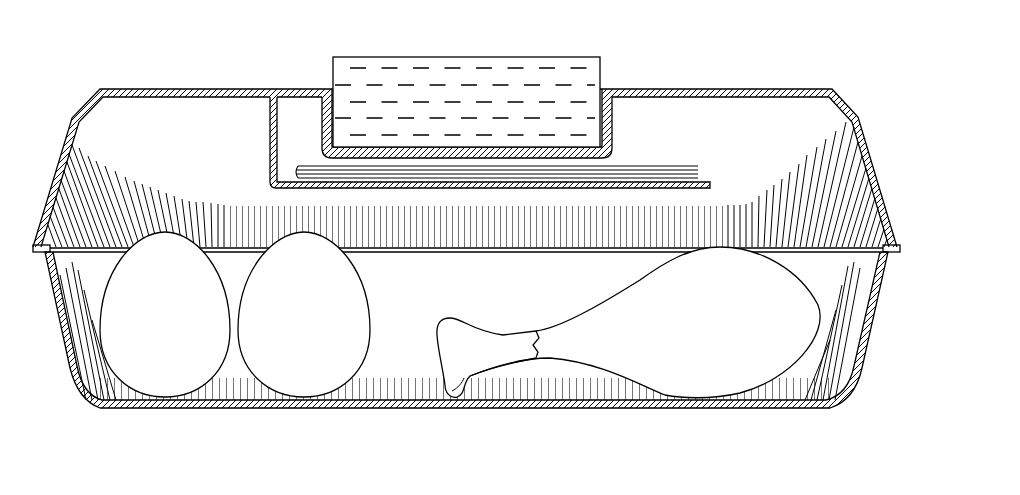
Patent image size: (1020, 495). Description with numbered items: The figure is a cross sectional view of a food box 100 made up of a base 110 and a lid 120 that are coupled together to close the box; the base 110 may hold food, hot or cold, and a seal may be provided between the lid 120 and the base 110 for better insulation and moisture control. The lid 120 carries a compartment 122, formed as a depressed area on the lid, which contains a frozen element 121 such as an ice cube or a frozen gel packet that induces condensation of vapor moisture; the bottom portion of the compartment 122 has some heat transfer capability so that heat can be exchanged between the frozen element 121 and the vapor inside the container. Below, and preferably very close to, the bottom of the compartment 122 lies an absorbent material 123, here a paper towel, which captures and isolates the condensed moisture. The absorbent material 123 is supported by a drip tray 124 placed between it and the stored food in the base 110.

The food box 100 is at (112, 40).
The base 110 is at (70, 358).
The lid 120 is at (851, 94).
The frozen element 121 is at (467, 57).
The compartment 122 is at (612, 116).
The absorbent material 123 is at (700, 176).
The drip tray 124 is at (268, 117).